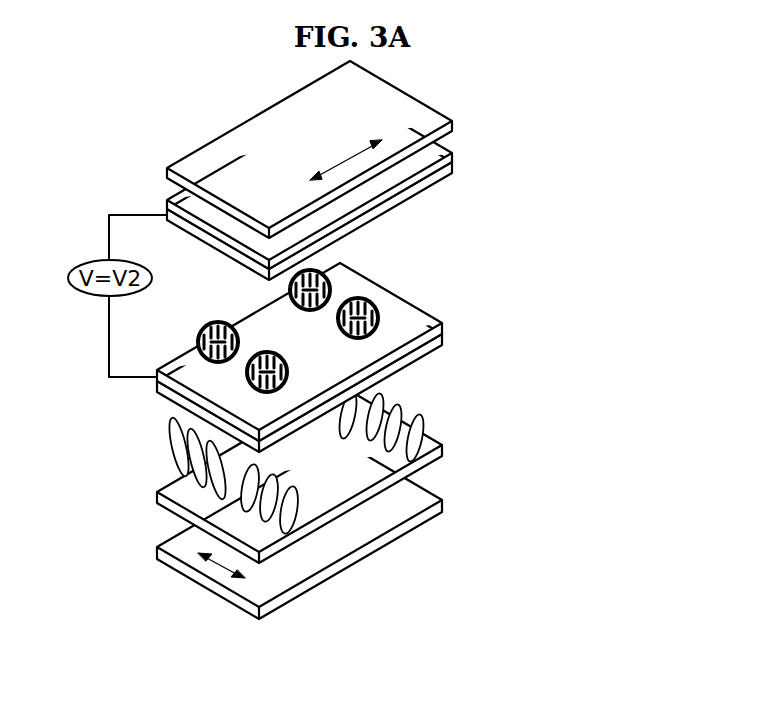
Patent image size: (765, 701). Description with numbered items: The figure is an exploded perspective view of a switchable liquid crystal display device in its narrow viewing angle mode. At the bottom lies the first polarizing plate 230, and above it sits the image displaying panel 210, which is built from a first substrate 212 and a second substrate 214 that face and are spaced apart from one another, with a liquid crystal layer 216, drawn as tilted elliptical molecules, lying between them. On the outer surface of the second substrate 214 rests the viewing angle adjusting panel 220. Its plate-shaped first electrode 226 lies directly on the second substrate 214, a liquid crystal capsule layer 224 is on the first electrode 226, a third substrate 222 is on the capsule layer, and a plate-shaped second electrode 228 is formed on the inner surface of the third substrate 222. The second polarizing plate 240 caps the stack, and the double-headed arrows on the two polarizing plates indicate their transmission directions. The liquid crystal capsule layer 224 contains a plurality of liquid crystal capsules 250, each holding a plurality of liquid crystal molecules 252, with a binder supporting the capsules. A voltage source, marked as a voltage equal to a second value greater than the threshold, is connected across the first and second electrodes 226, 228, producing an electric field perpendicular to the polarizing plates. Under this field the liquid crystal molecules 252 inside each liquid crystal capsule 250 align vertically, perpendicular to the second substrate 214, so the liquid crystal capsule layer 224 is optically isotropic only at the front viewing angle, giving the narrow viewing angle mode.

The second polarizing plate 240 is at (451, 124).
The third substrate 222 is at (355, 181).
The second electrode 228 is at (453, 168).
The liquid crystal capsule layer 224 is at (400, 233).
The viewing angle adjusting panel 220 is at (388, 267).
The liquid crystal molecules 252 is at (381, 306).
The liquid crystal capsules 250 is at (381, 316).
The first electrode 226 is at (443, 331).
The second substrate 214 is at (443, 347).
The liquid crystal layer 216 is at (448, 412).
The first substrate 212 is at (443, 450).
The image displaying panel 210 is at (396, 418).
The first polarizing plate 230 is at (443, 506).